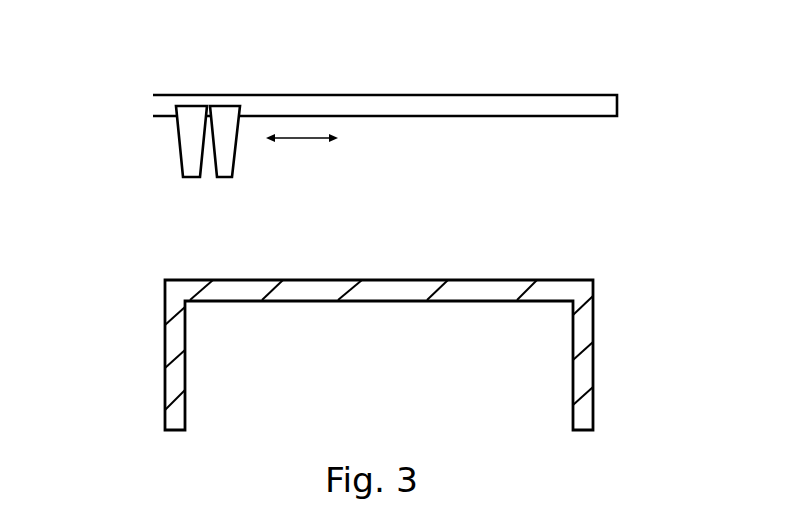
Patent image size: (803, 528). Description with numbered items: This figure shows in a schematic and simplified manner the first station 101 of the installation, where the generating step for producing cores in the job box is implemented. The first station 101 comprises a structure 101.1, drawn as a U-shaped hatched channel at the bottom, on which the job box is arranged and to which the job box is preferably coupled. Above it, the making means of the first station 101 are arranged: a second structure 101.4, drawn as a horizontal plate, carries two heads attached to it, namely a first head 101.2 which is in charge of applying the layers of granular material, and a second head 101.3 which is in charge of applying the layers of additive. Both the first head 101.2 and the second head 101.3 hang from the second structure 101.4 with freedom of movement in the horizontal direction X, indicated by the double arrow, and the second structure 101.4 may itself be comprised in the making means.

The first station 101 is at (600, 53).
The structure 101.1 is at (316, 293).
The first head 101.2 is at (224, 167).
The second head 101.3 is at (192, 166).
The second structure 101.4 is at (444, 103).